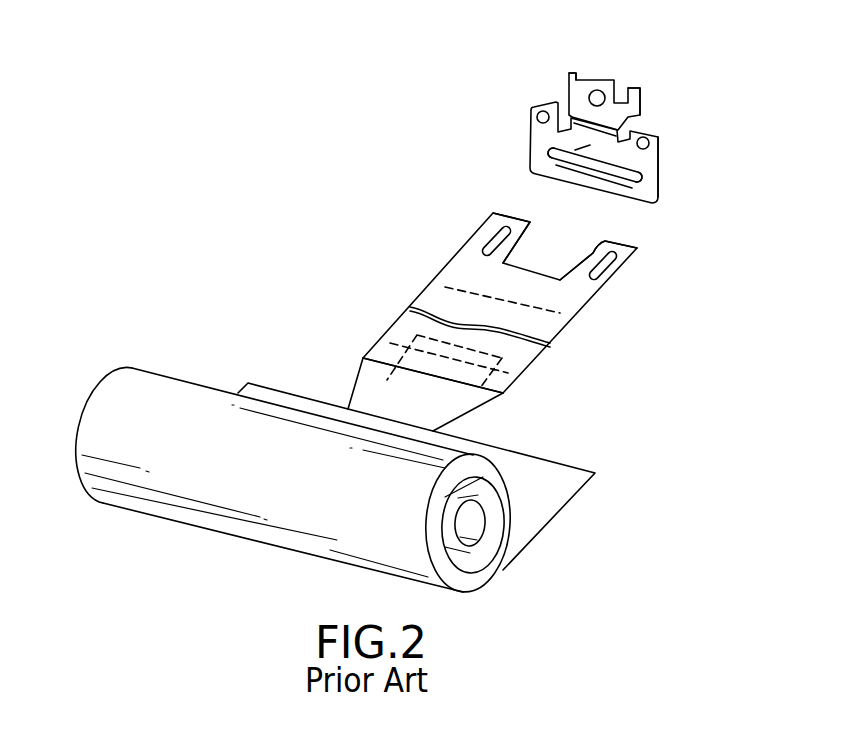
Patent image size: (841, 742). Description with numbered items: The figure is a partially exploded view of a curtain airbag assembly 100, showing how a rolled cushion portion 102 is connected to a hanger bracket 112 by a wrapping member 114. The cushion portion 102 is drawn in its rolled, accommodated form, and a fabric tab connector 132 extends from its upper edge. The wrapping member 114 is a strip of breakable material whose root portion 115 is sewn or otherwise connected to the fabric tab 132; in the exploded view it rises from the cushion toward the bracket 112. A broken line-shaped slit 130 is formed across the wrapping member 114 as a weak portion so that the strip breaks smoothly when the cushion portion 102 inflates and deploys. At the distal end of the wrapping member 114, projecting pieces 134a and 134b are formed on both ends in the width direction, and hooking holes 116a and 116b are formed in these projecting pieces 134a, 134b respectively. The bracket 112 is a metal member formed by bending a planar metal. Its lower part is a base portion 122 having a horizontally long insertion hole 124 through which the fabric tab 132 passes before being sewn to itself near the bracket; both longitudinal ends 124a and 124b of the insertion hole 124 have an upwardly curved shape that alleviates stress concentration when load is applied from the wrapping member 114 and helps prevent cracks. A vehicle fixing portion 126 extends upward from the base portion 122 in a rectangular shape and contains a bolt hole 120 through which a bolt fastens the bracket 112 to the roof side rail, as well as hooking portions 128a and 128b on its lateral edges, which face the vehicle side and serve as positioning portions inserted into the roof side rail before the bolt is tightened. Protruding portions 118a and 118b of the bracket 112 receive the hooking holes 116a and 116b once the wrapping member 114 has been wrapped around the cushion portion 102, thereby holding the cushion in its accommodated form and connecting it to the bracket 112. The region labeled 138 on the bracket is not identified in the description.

The curtain airbag assembly 100 is at (306, 167).
The cushion portion 102 is at (557, 478).
The hanger bracket 112 is at (612, 123).
The wrapping member 114 is at (528, 297).
The root portion 115 is at (378, 352).
The hooking hole 116a is at (505, 218).
The hooking hole 116b is at (600, 253).
The protruding portion 118a is at (543, 110).
The protruding portion 118b is at (652, 138).
The bolt hole 120 is at (596, 87).
The base portion 122 is at (660, 170).
The insertion hole 124 is at (630, 185).
The end of insertion hole 124a is at (553, 157).
The end of insertion hole 124b is at (642, 178).
The vehicle fixing portion 126 is at (640, 115).
The hooking portion 128a is at (571, 73).
The hooking portion 128b is at (638, 90).
The broken line-shaped slit 130 is at (555, 308).
The fabric tab connector 132 is at (452, 412).
The projecting piece 134a is at (496, 233).
The projecting piece 134b is at (637, 248).
The plate surface 138 is at (583, 147).